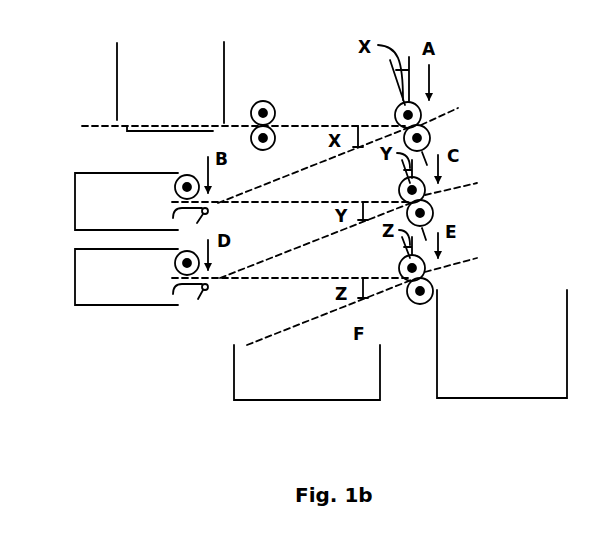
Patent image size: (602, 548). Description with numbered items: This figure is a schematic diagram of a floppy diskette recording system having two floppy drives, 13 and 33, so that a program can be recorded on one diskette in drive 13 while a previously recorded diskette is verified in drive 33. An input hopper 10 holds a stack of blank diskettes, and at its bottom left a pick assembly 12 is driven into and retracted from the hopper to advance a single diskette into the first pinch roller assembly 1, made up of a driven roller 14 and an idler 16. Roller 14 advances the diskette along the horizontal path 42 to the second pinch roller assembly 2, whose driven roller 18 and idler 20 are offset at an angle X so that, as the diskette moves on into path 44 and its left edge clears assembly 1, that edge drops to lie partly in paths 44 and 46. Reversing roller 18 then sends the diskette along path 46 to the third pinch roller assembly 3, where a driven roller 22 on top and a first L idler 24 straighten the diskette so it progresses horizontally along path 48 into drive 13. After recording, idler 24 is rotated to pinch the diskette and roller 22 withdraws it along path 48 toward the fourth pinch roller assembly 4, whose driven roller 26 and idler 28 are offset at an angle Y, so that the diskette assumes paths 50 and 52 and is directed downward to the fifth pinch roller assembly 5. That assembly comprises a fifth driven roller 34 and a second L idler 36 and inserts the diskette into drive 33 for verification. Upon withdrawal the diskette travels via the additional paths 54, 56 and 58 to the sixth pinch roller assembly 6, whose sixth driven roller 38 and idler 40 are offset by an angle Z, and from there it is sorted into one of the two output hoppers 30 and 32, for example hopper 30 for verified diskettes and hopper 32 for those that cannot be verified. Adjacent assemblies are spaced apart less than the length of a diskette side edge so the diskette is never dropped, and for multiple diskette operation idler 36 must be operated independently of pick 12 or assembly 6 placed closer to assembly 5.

The input hopper 10 is at (225, 58).
The pick assembly 12 is at (150, 134).
The floppy drive 13 is at (73, 185).
The driven roller 14 is at (276, 138).
The idler 16 is at (263, 101).
The driven roller 18 is at (430, 143).
The idler 20 is at (398, 110).
The driven roller 22 is at (185, 175).
The first L idler 24 is at (198, 224).
The driven roller 26 is at (433, 215).
The idler 28 is at (428, 193).
The output hopper 30 is at (322, 402).
The output hopper 32 is at (477, 398).
The floppy drive 33 is at (135, 305).
The fifth driven roller 34 is at (185, 251).
The second L idler 36 is at (200, 298).
The sixth driven roller 38 is at (408, 297).
The idler 40 is at (428, 273).
The path 42 is at (342, 125).
The path 44 is at (448, 108).
The path 46 is at (275, 182).
The path 48 is at (302, 202).
The path 50 is at (477, 184).
The path 52 is at (312, 243).
The path 54 is at (302, 278).
The path 56 is at (477, 258).
The path 58 is at (310, 320).
The first pinch roller assembly 1 is at (273, 107).
The second pinch roller assembly 2 is at (361, 124).
The third pinch roller assembly 3 is at (167, 173).
The fourth pinch roller assembly 4 is at (449, 214).
The fifth pinch roller assembly 5 is at (162, 253).
The sixth pinch roller assembly 6 is at (427, 295).